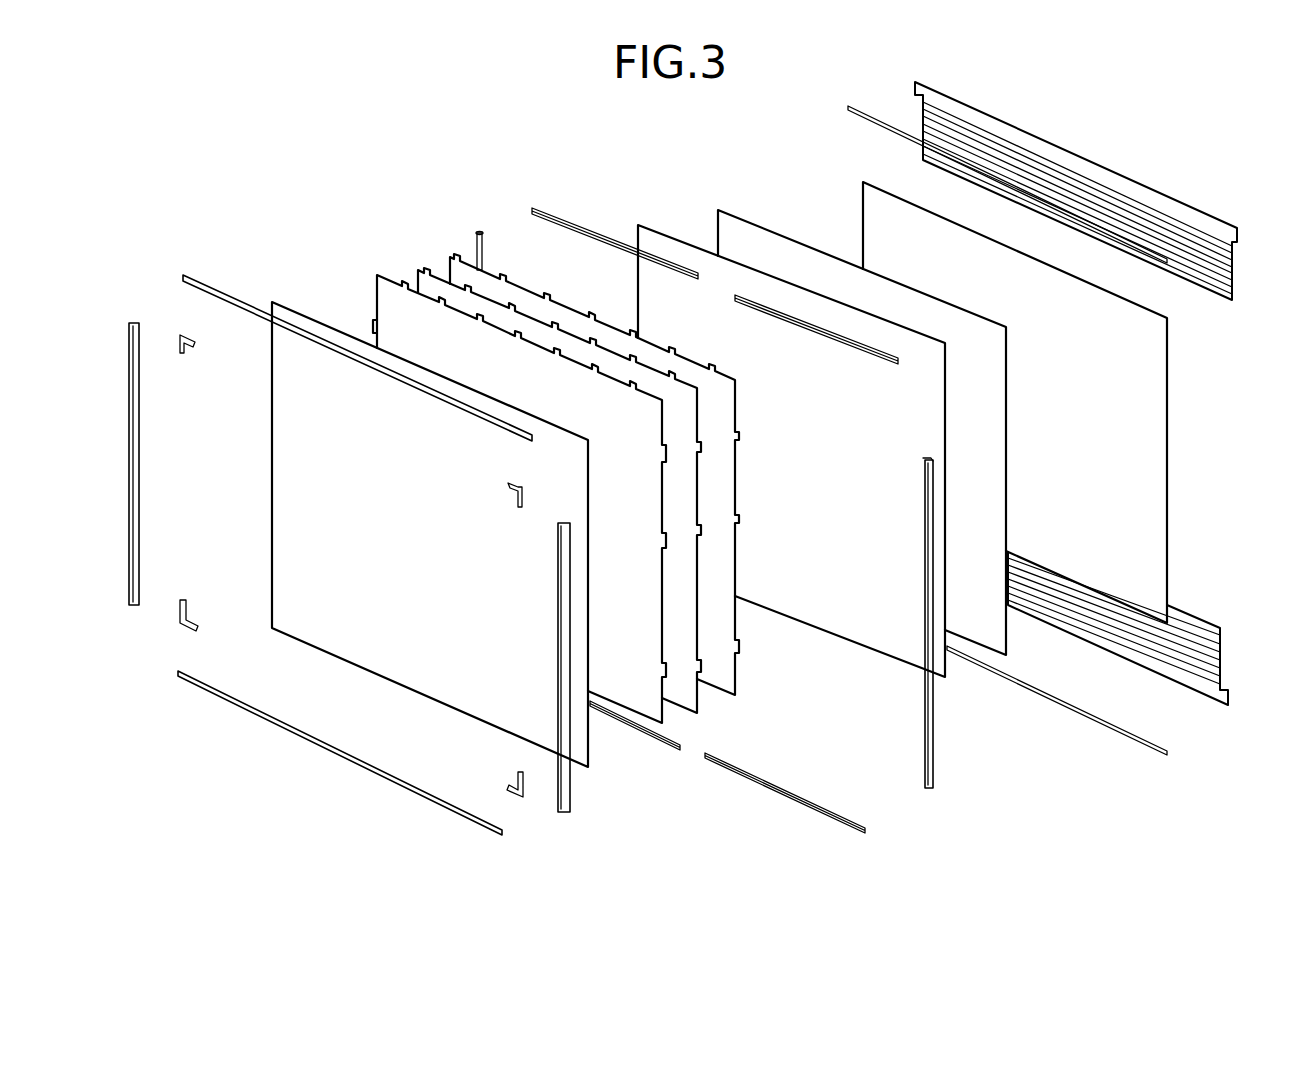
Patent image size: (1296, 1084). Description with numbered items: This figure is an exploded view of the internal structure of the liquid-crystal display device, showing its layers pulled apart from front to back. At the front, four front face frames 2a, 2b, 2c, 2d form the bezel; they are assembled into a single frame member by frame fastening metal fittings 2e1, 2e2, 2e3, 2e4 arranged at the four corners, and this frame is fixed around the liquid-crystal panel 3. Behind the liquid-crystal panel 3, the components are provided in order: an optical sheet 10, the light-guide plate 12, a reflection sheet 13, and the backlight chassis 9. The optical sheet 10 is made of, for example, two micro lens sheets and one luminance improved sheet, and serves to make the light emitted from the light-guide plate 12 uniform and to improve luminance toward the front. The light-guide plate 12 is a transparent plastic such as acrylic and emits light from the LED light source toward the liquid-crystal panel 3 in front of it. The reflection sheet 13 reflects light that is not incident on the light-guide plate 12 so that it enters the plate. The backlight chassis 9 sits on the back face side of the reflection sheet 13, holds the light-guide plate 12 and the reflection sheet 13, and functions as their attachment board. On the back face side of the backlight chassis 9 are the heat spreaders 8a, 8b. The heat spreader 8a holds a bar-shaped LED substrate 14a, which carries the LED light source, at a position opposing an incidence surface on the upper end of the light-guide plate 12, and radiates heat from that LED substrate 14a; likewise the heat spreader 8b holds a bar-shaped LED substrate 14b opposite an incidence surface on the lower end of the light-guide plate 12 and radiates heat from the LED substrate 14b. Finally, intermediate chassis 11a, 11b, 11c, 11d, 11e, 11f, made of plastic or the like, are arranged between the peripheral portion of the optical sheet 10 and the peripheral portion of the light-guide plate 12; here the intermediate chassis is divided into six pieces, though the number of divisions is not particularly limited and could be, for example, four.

The liquid-crystal panel 3 is at (296, 480).
The front face frame 2a is at (205, 278).
The front face frame 2b is at (128, 372).
The front face frame 2c is at (362, 770).
The front face frame 2d is at (557, 640).
The frame fastening metal fitting 2e1 is at (183, 356).
The frame fastening metal fitting 2e2 is at (181, 598).
The frame fastening metal fitting 2e3 is at (508, 783).
The frame fastening metal fitting 2e4 is at (506, 490).
The optical sheet 10 is at (450, 247).
The intermediate chassis 11a is at (868, 352).
The intermediate chassis 11b is at (545, 208).
The intermediate chassis 11c is at (478, 230).
The intermediate chassis 11d is at (645, 742).
The intermediate chassis 11e is at (802, 808).
The intermediate chassis 11f is at (924, 752).
The light-guide plate 12 is at (660, 244).
The reflection sheet 13 is at (745, 230).
The backlight chassis 9 is at (868, 198).
The heat spreader 8a is at (1235, 262).
The heat spreader 8b is at (1222, 658).
The LED substrate 14a is at (848, 110).
The LED substrate 14b is at (1170, 745).